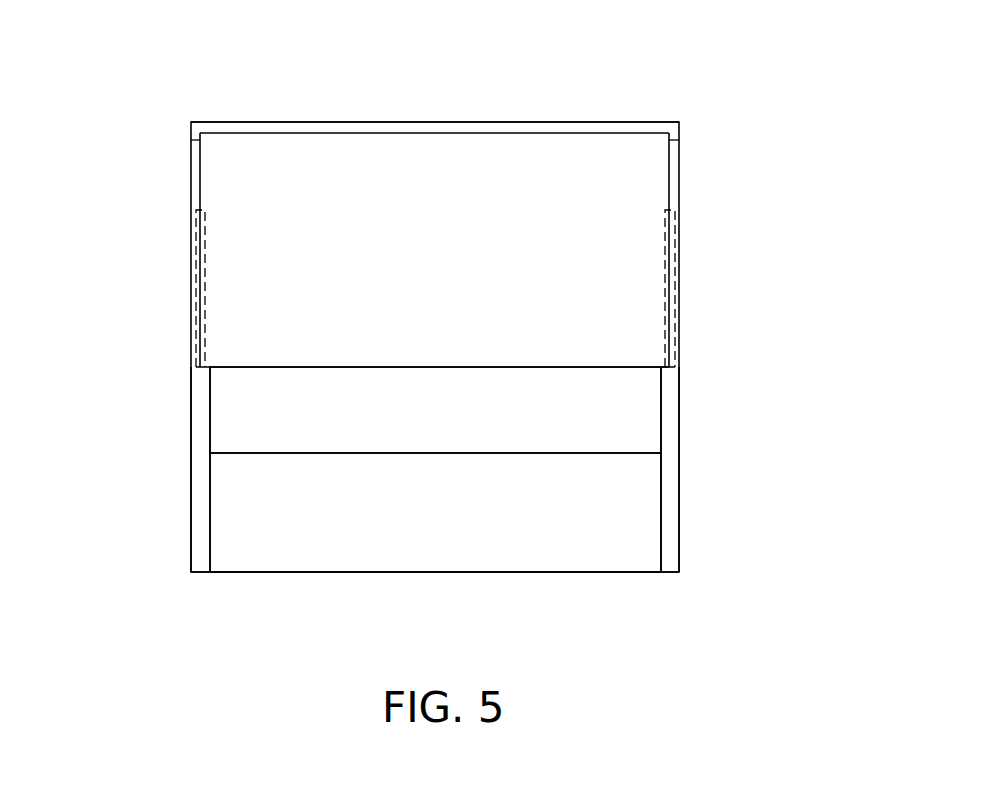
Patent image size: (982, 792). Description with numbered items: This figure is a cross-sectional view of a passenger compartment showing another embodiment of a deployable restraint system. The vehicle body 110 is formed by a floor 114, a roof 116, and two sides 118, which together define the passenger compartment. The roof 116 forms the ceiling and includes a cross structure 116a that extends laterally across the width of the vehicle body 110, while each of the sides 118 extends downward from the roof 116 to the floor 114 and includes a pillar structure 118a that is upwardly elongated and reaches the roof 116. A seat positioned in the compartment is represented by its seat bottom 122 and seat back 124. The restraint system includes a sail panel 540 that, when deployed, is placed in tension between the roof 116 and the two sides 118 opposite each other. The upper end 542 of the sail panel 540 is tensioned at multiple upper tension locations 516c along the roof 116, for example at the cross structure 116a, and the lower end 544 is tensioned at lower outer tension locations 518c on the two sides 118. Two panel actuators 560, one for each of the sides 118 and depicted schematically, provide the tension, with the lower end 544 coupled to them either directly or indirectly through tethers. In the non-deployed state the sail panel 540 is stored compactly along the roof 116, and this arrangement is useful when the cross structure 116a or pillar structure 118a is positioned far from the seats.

The vehicle body 110 is at (637, 68).
The floor 114 is at (545, 573).
The roof 116 is at (400, 123).
The cross structure 116a is at (462, 128).
The sides 118 is at (192, 515).
The pillar structure 118a is at (197, 547).
The seat bottom 122 is at (453, 522).
The seat back 124 is at (453, 418).
The upper tension locations 516c is at (363, 133).
The lower outer tension locations 518c is at (200, 362).
The sail panel 540 is at (212, 182).
The upper end 542 is at (648, 137).
The lower end 544 is at (632, 364).
The panel actuator 560 is at (197, 300).